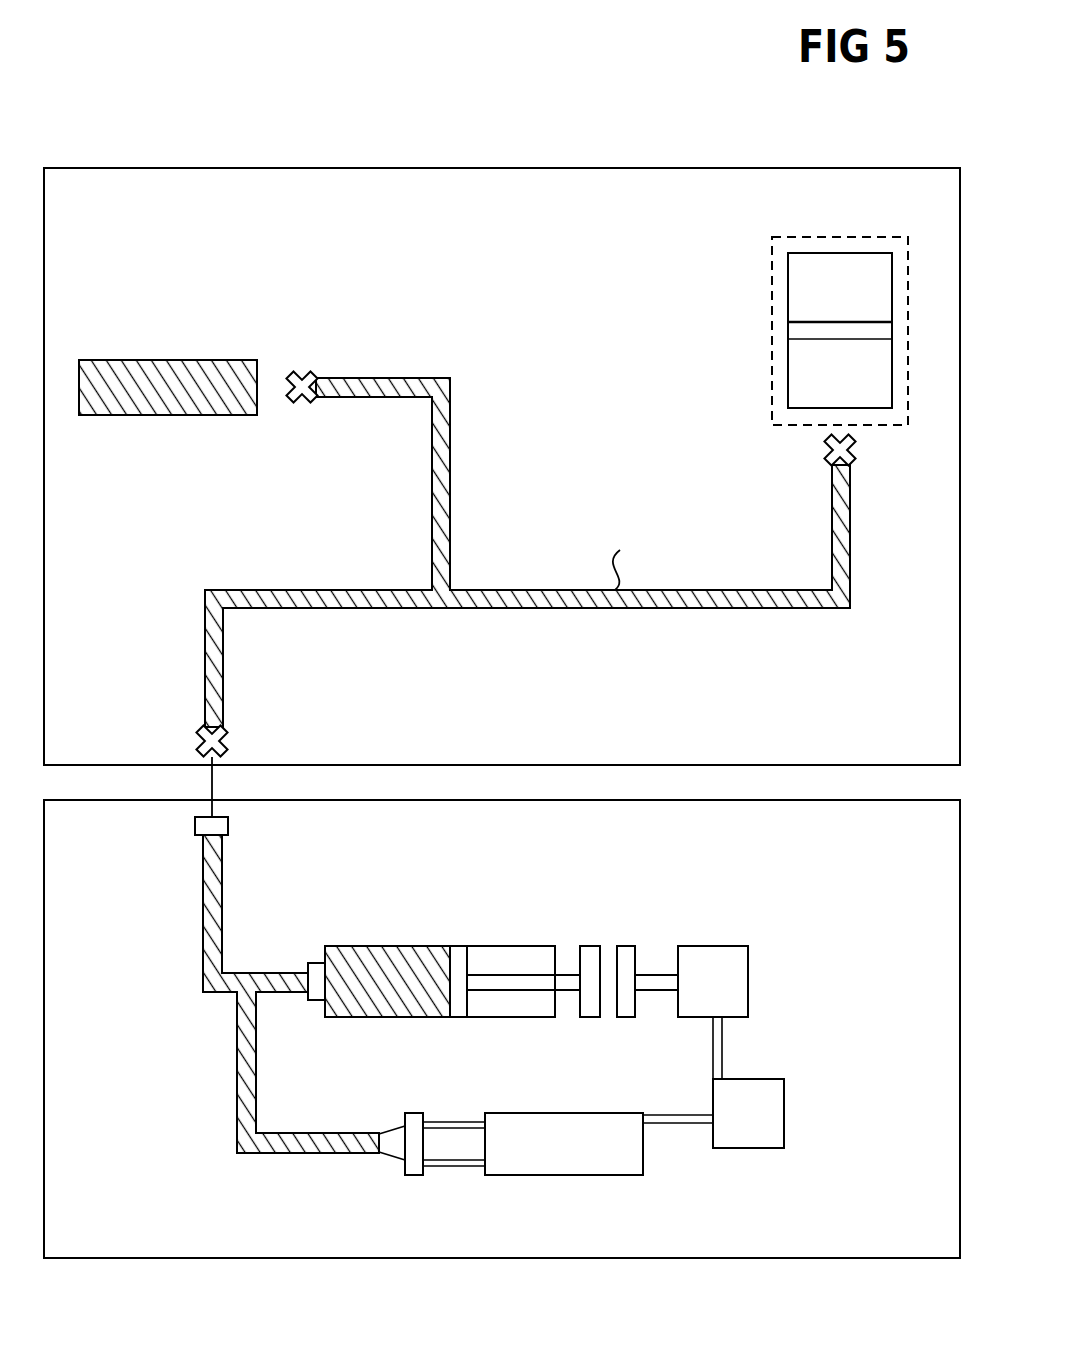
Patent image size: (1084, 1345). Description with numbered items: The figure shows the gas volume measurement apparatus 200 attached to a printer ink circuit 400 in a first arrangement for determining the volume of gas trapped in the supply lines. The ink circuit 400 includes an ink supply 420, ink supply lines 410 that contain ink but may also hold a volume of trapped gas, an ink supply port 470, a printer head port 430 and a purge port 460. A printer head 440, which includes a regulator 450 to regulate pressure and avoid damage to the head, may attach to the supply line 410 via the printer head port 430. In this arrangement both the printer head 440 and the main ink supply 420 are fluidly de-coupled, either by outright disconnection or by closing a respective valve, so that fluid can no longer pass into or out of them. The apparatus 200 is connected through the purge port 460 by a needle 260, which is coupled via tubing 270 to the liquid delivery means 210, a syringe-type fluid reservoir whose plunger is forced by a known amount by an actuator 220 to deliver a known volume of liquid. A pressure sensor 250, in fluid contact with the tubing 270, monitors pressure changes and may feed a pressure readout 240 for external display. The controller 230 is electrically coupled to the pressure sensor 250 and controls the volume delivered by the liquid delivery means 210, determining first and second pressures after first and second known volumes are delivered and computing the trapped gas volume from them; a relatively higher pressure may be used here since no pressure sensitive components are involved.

The ink circuit 400 is at (93, 205).
The gas volume measurement apparatus 200 is at (93, 833).
The ink supply lines 410 is at (450, 493).
The ink supply 420 is at (178, 360).
The printer head port 430 is at (848, 458).
The printer head 440 is at (843, 253).
The regulator 450 is at (788, 332).
The purge port 460 is at (225, 743).
The ink supply port 470 is at (310, 372).
The liquid delivery means 210 is at (660, 938).
The actuator 220 is at (718, 946).
The controller 230 is at (750, 1149).
The pressure readout 240 is at (580, 1113).
The pressure sensor 250 is at (413, 1113).
The needle 260 is at (213, 785).
The tubing 270 is at (250, 973).